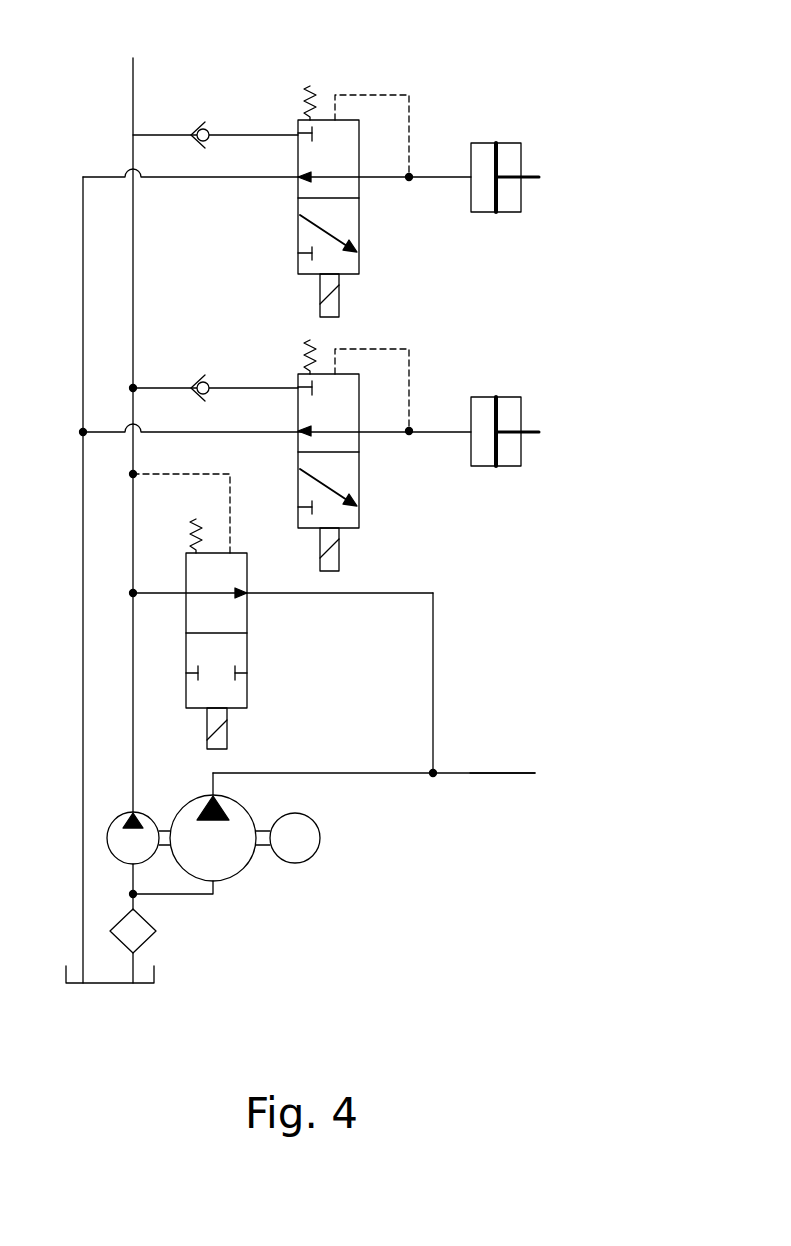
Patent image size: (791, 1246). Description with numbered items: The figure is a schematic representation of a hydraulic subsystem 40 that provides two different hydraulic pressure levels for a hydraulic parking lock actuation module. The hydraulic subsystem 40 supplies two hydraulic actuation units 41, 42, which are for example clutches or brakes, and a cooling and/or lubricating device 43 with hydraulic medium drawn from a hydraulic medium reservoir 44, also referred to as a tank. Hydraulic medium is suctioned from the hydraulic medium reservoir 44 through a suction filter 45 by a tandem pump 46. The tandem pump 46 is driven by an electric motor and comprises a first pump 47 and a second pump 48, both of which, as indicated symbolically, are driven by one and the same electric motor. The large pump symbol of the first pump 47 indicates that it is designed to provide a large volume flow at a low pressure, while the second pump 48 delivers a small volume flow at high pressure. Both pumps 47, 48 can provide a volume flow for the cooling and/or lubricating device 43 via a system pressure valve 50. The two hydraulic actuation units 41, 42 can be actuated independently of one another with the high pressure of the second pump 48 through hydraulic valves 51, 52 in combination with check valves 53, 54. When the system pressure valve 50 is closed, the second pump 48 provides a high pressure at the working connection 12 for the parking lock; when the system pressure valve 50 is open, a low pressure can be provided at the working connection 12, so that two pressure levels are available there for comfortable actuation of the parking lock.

The working connection 12 is at (136, 467).
The hydraulic subsystem 40 is at (506, 90).
The hydraulic actuation unit 41 is at (521, 150).
The hydraulic actuation unit 42 is at (521, 405).
The cooling and/or lubricating device 43 is at (598, 791).
The hydraulic medium reservoir 44 is at (118, 985).
The suction filter 45 is at (157, 931).
The tandem pump 46 is at (326, 890).
The first pump 47 is at (226, 793).
The second pump 48 is at (145, 810).
The system pressure valve 50 is at (268, 652).
The hydraulic valve 51 is at (360, 237).
The hydraulic valve 52 is at (360, 490).
The check valve 53 is at (198, 126).
The check valve 54 is at (198, 380).